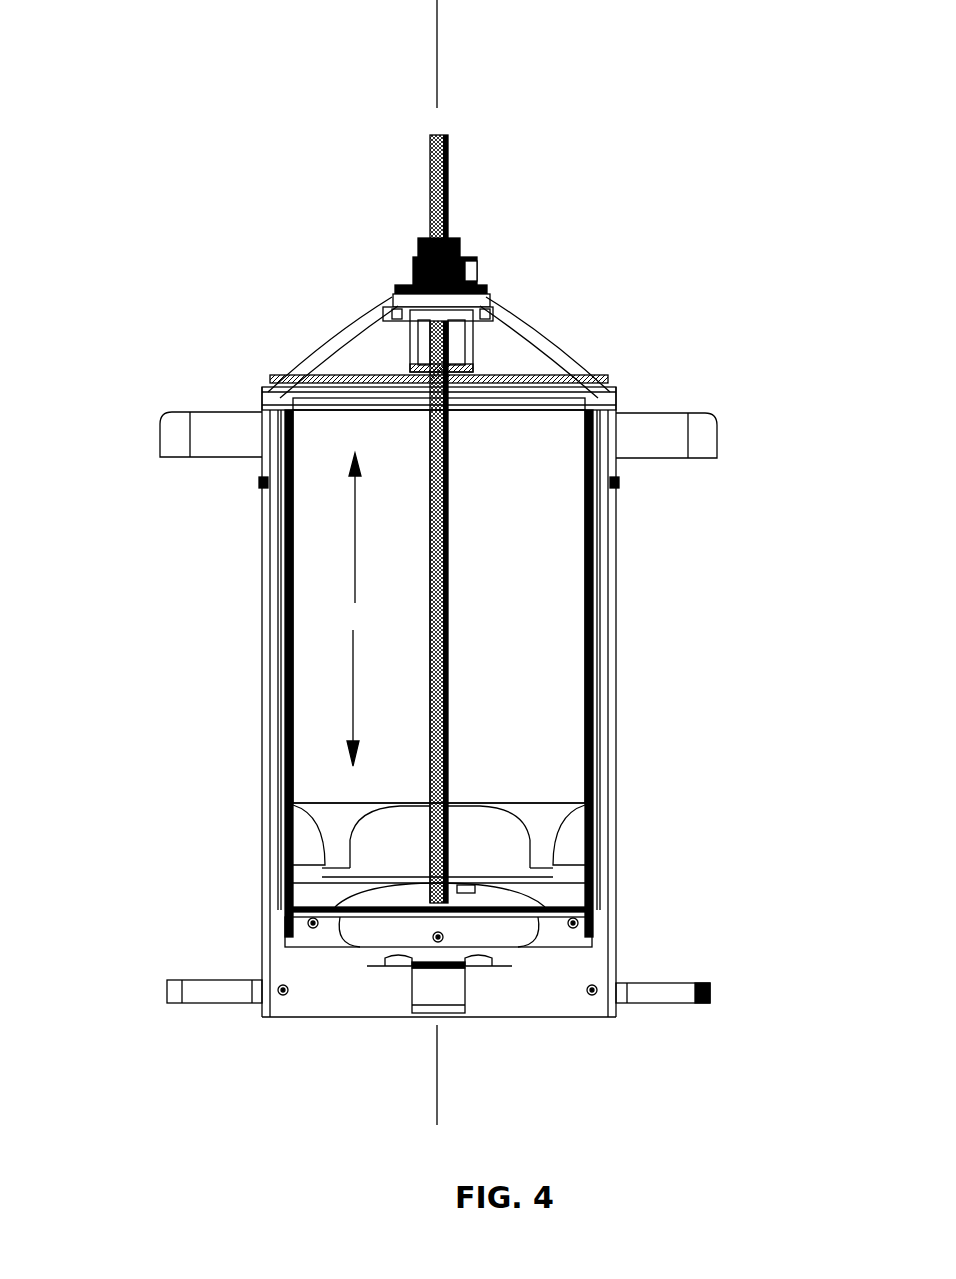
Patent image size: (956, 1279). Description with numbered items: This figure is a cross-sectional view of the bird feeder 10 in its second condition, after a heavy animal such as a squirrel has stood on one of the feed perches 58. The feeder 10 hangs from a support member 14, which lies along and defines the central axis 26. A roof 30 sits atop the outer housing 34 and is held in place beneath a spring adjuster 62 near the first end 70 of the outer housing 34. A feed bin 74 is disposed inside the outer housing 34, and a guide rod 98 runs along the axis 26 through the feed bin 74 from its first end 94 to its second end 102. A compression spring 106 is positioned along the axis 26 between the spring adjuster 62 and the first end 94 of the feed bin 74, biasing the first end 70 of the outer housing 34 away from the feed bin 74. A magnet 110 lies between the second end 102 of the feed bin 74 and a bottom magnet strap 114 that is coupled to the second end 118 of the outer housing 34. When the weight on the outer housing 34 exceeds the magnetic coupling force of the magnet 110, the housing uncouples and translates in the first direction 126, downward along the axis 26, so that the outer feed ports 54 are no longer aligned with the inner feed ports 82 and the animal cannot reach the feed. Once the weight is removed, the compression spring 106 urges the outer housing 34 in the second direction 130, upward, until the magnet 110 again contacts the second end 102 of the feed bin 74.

The bird feeder 10 is at (706, 145).
The support member 14 is at (448, 178).
The central axis 26 is at (437, 52).
The roof 30 is at (163, 415).
The outer housing 34 is at (262, 700).
The outer feed port 54 is at (616, 908).
The feed perch 58 is at (672, 990).
The spring adjuster 62 is at (388, 290).
The first end of the outer housing 70 is at (262, 415).
The feed bin 74 is at (555, 702).
The inner feed port 82 is at (572, 845).
The first end of the feed bin 94 is at (305, 410).
The guide rod 98 is at (448, 637).
The second end of the feed bin 102 is at (325, 948).
The compression spring 106 is at (475, 335).
The magnet 110 is at (432, 960).
The bottom magnet strap 114 is at (493, 962).
The second end of the outer housing 118 is at (280, 1018).
The first direction 126 is at (355, 712).
The second direction 130 is at (357, 525).